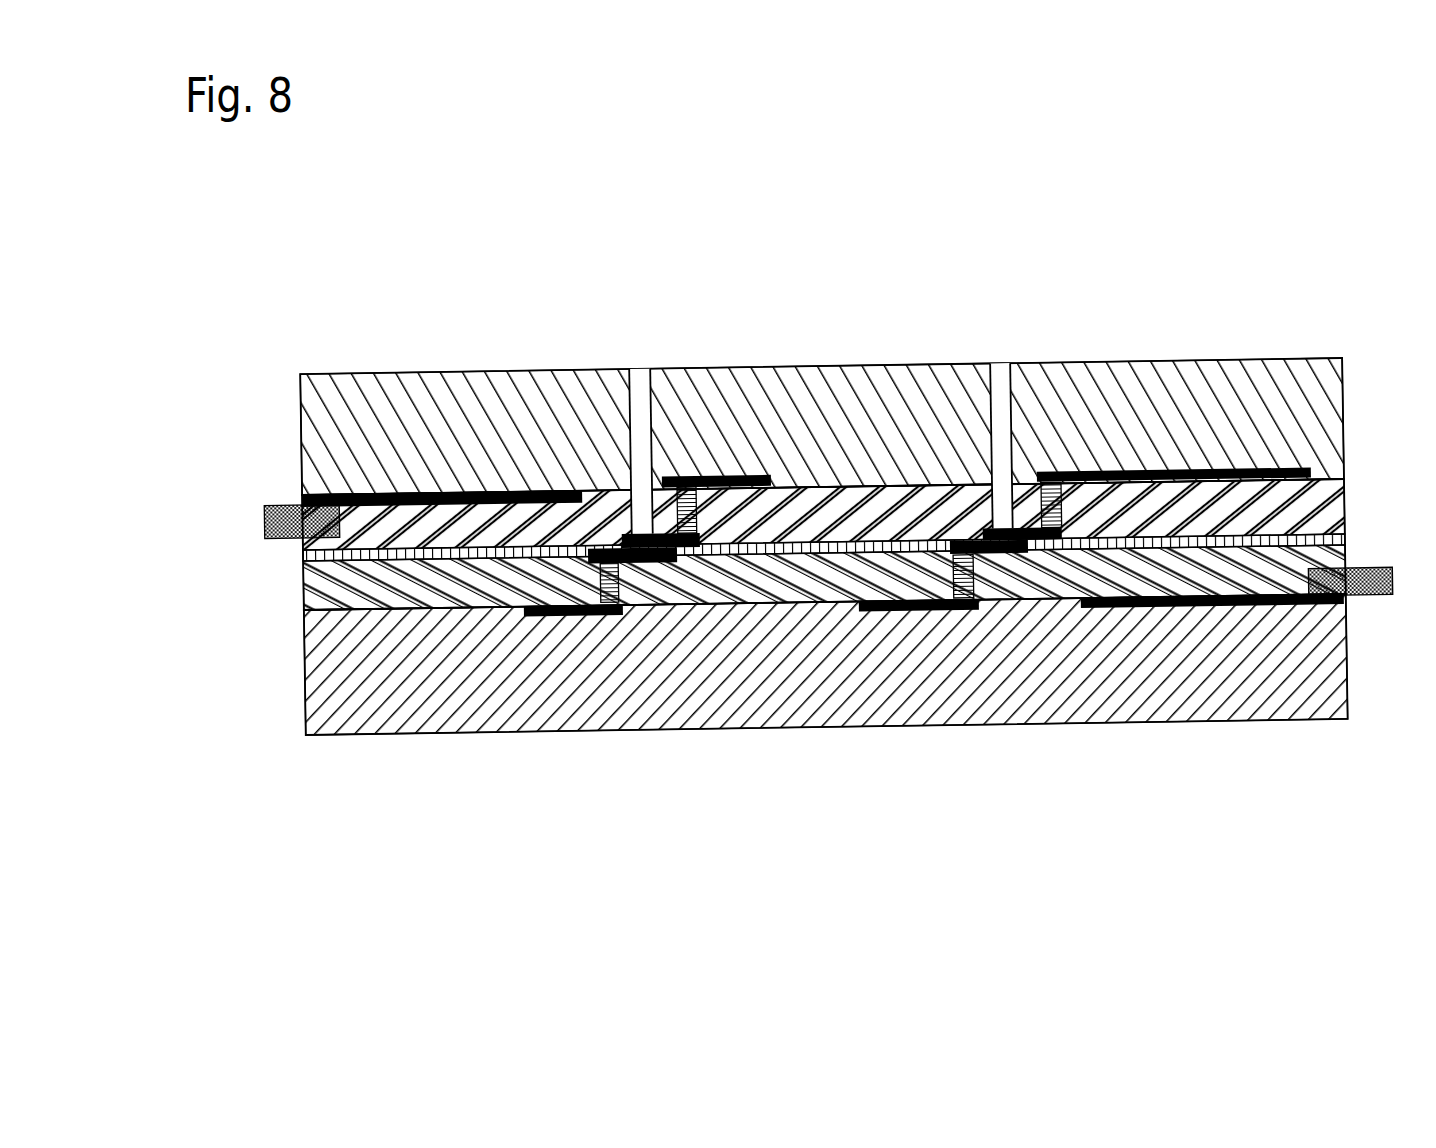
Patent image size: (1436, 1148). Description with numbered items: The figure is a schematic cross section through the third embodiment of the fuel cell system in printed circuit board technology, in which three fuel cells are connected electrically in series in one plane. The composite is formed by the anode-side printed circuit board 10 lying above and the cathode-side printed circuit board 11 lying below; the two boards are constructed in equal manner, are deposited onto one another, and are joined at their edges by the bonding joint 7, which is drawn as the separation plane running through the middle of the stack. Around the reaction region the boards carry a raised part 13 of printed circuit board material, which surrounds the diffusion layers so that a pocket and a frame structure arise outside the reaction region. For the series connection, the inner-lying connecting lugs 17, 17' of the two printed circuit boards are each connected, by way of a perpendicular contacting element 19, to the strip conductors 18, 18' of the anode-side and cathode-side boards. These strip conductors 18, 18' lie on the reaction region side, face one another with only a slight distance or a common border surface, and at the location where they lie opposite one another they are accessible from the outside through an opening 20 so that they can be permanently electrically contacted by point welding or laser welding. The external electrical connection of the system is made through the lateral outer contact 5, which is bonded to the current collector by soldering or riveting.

The outer contact 5 is at (1367, 602).
The bonding joint 7 is at (322, 562).
The anode-side printed circuit board 10 is at (356, 416).
The cathode-side printed circuit board 11 is at (322, 668).
The raised part of printed circuit board material 13 is at (830, 573).
The inner-lying connecting lug 17 is at (561, 714).
The inner-lying connecting lug 17' is at (784, 363).
The strip conductor 18 is at (722, 689).
The strip conductor 18' is at (586, 409).
The perpendicular contacting element 19 is at (619, 588).
The channel 20 is at (646, 422).